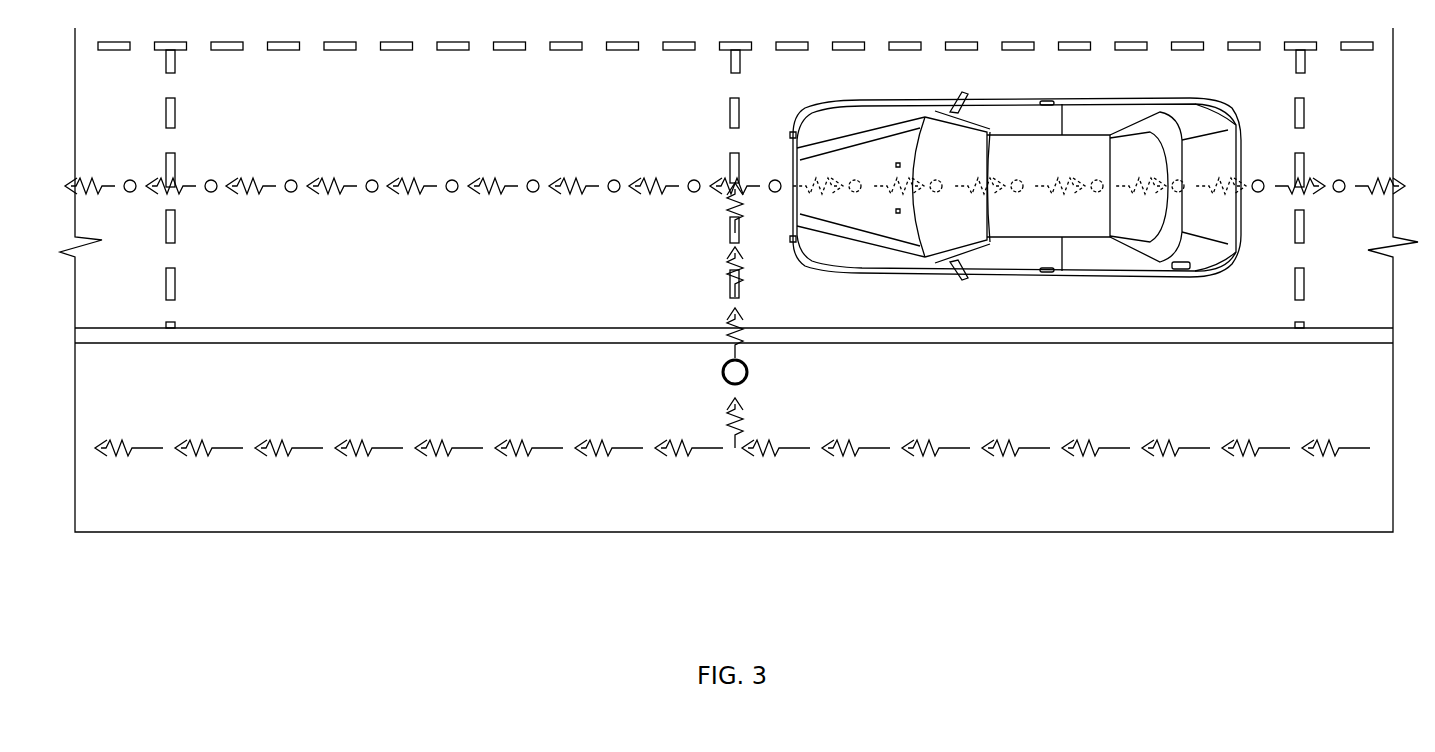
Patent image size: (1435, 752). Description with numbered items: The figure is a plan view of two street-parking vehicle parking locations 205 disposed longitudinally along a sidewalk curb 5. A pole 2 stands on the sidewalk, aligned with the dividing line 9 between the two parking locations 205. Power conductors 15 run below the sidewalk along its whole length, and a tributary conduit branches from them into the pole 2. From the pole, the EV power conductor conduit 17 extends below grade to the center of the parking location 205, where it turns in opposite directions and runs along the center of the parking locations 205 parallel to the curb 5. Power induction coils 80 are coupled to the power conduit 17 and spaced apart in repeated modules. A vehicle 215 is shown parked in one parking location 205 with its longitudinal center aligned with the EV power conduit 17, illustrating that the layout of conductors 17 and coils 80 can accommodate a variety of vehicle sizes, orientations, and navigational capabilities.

The pole 2 is at (748, 372).
The sidewalk curb 5 is at (515, 330).
The dividing line 9 is at (1130, 42).
The power conductors 15 is at (377, 447).
The EV power conductor conduit 17 is at (568, 193).
The power induction coils 80 is at (453, 193).
The vehicle parking location 205 is at (739, 280).
The vehicle 215 is at (1028, 124).